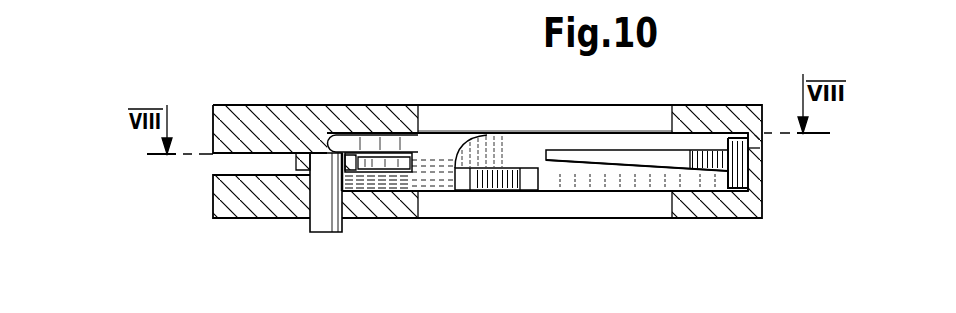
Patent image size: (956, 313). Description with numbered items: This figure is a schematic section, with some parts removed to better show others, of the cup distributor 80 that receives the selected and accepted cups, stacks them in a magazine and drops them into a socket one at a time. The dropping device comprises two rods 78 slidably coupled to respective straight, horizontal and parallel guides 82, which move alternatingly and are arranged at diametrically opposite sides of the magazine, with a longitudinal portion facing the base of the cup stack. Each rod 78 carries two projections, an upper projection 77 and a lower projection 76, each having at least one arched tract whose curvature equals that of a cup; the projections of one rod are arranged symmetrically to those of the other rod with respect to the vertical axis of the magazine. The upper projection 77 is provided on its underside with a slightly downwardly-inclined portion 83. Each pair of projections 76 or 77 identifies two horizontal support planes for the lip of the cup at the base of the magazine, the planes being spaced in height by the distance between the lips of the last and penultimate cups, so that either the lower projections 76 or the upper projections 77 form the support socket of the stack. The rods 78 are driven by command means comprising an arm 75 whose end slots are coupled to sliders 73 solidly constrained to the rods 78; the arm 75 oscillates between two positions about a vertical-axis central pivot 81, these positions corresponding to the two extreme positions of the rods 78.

The slider 73 is at (386, 152).
The arm 75 is at (403, 172).
The lower projection 76 is at (507, 178).
The upper projection 77 is at (632, 157).
The rod 78 is at (747, 163).
The cup distributor 80 is at (170, 174).
The central pivot 81 is at (330, 212).
The guide 82 is at (757, 143).
The downwardly-inclined portion 83 is at (648, 165).